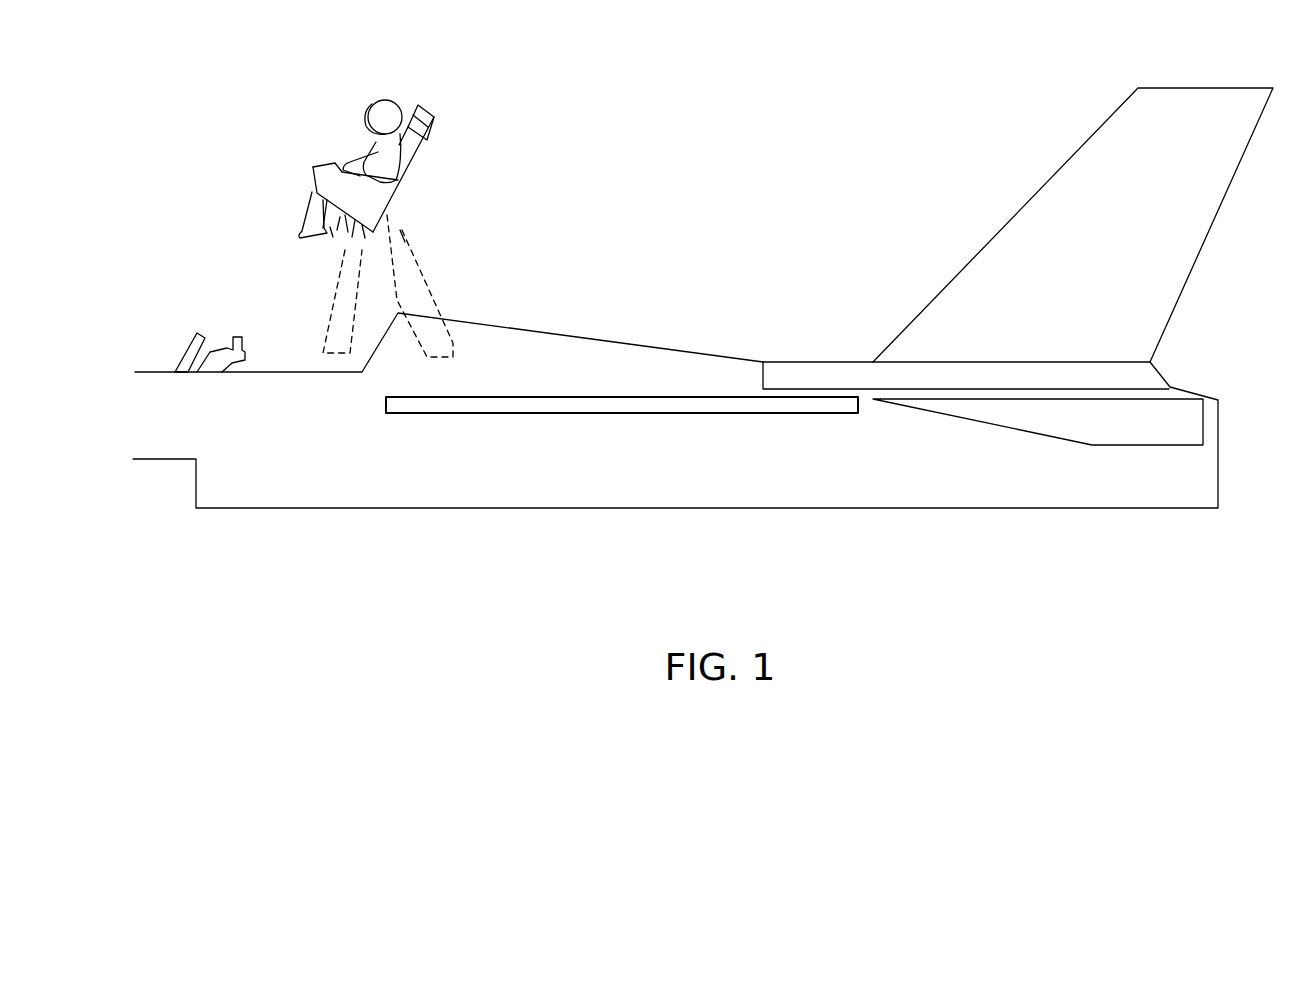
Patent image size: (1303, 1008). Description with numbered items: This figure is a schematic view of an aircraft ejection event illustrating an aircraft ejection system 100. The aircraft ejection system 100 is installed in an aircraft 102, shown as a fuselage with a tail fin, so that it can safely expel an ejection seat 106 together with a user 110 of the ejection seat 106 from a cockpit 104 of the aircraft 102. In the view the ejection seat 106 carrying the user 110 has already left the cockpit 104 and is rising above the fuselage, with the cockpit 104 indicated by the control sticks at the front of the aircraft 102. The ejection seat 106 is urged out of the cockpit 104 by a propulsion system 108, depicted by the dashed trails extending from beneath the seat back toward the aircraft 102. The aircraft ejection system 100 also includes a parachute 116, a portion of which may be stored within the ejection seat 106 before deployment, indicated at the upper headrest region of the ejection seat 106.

The aircraft ejection system 100 is at (570, 192).
The aircraft 102 is at (718, 466).
The cockpit 104 is at (267, 353).
The ejection seat 106 is at (435, 143).
The propulsion system 108 is at (405, 260).
The user 110 is at (376, 103).
The parachute 116 is at (445, 115).